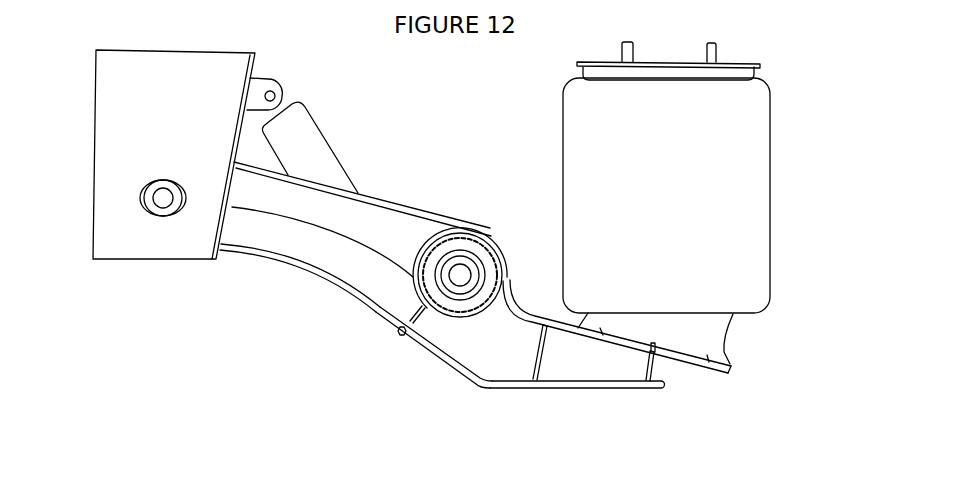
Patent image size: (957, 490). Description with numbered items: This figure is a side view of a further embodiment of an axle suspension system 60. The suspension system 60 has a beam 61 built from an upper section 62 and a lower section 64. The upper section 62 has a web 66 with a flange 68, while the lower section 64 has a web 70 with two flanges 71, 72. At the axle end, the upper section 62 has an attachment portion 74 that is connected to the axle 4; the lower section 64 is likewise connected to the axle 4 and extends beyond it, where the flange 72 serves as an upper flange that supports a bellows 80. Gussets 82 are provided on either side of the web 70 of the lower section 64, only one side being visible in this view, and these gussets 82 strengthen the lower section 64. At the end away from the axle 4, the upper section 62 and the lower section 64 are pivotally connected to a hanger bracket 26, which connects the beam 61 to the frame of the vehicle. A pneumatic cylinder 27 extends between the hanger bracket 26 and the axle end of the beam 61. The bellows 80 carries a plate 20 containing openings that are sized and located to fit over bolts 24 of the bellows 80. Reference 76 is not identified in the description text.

The axle 4 is at (482, 264).
The plate 20 is at (662, 62).
The bolts 24 is at (713, 50).
The hanger bracket 26 is at (123, 80).
The pneumatic cylinder 27 is at (307, 145).
The suspension system 60 is at (498, 106).
The beam 61 is at (243, 240).
The upper section 62 is at (388, 224).
The lower section 64 is at (362, 273).
The web 66 is at (432, 231).
The flange 68 is at (372, 197).
The web 70 is at (312, 248).
The flange 71 is at (375, 310).
The flange 72 is at (613, 343).
The attachment portion 74 is at (480, 241).
The bushing housing bottom 76 is at (477, 318).
The bellows 80 is at (748, 285).
The gussets 82 is at (420, 325).